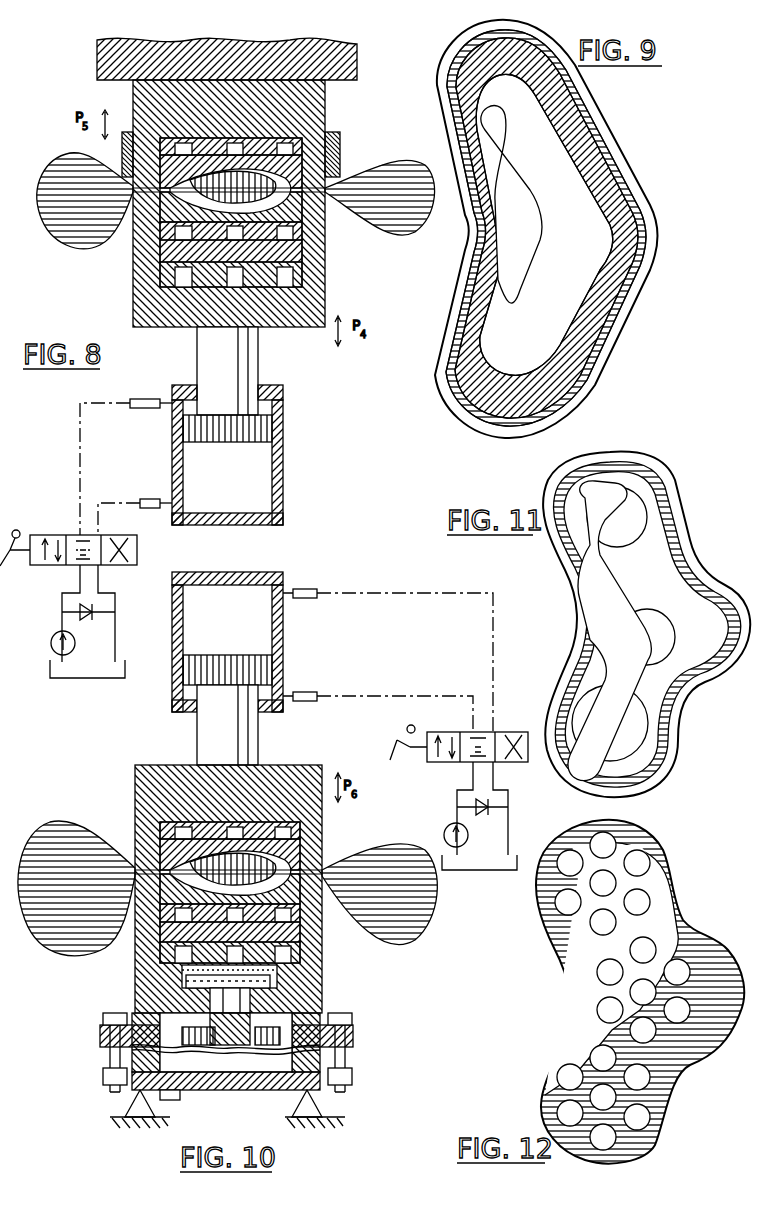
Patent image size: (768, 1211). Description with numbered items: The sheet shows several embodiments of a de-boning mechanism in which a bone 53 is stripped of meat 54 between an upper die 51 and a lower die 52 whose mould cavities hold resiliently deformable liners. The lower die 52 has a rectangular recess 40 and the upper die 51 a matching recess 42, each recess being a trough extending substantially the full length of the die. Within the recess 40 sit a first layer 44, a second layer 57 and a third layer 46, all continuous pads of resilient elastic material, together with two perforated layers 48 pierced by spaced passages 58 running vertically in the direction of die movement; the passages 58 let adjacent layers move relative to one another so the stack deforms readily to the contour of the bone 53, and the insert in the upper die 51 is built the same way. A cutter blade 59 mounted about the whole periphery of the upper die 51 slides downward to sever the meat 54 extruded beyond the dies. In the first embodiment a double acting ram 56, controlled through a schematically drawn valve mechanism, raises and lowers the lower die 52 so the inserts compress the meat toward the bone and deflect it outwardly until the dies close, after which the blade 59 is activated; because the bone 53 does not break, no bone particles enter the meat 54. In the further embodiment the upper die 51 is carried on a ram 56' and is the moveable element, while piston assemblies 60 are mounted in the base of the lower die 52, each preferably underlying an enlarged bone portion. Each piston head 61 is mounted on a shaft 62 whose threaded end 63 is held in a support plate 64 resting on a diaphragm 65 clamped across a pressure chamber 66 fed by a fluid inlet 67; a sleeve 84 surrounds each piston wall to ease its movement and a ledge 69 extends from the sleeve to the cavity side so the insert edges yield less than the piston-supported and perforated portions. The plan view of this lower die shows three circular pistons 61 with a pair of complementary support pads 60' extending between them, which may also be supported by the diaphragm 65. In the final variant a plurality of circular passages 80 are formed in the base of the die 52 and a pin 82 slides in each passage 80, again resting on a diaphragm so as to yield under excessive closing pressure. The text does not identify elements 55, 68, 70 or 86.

In FIG. 8, the recess 40 is at (160, 290).
In FIG. 8, the recess 42 is at (300, 152).
In FIG. 8, the first layer 44 is at (308, 215).
In FIG. 8, the third layer 46 is at (302, 238).
In FIG. 8, the perforated layer 48 is at (250, 268).
In FIG. 8, the upper die 51 is at (318, 88).
In FIG. 10, the upper die 51 is at (312, 822).
In FIG. 8, the lower die 52 is at (322, 285).
In FIG. 10, the lower die 52 is at (312, 924).
In FIG. 12, the lower die 52 is at (665, 870).
In FIG. 8, the bone 53 is at (170, 125).
In FIG. 9, the bone 53 is at (567, 248).
In FIG. 10, the bone 53 is at (150, 795).
In FIG. 8, the meat 54 is at (72, 252).
In FIG. 8, the press plate 55 is at (345, 56).
In FIG. 8, the ram 56 is at (228, 455).
In FIG. 10, the ram 56' is at (256, 638).
In FIG. 8, the second layer 57 is at (178, 233).
In FIG. 10, the second layer 57 is at (170, 910).
In FIG. 8, the passages 58 is at (178, 270).
In FIG. 8, the cutter blade 59 is at (335, 140).
In FIG. 9, the cutter blade 59 is at (453, 300).
In FIG. 10, the piston assembly 60 is at (157, 1003).
In FIG. 11, the support pad 60' is at (646, 625).
In FIG. 10, the piston head 61 is at (278, 975).
In FIG. 11, the piston head 61 is at (640, 517).
In FIG. 10, the shaft 62 is at (265, 1000).
In FIG. 10, the threaded end 63 is at (227, 1052).
In FIG. 10, the support plate 64 is at (260, 1052).
In FIG. 10, the diaphragm 65 is at (197, 1047).
In FIG. 10, the pressure chamber 66 is at (270, 1047).
In FIG. 10, the fluid inlet 67 is at (130, 1113).
In FIG. 10, the ring 68 is at (170, 948).
In FIG. 10, the ledge 69 is at (182, 980).
In FIG. 10, the die 70 is at (300, 868).
In FIG. 12, the circular passages 80 is at (680, 968).
In FIG. 12, the pin 82 is at (567, 1112).
In FIG. 10, the sleeve 84 is at (279, 985).
In FIG. 10, the plate 86 is at (186, 977).